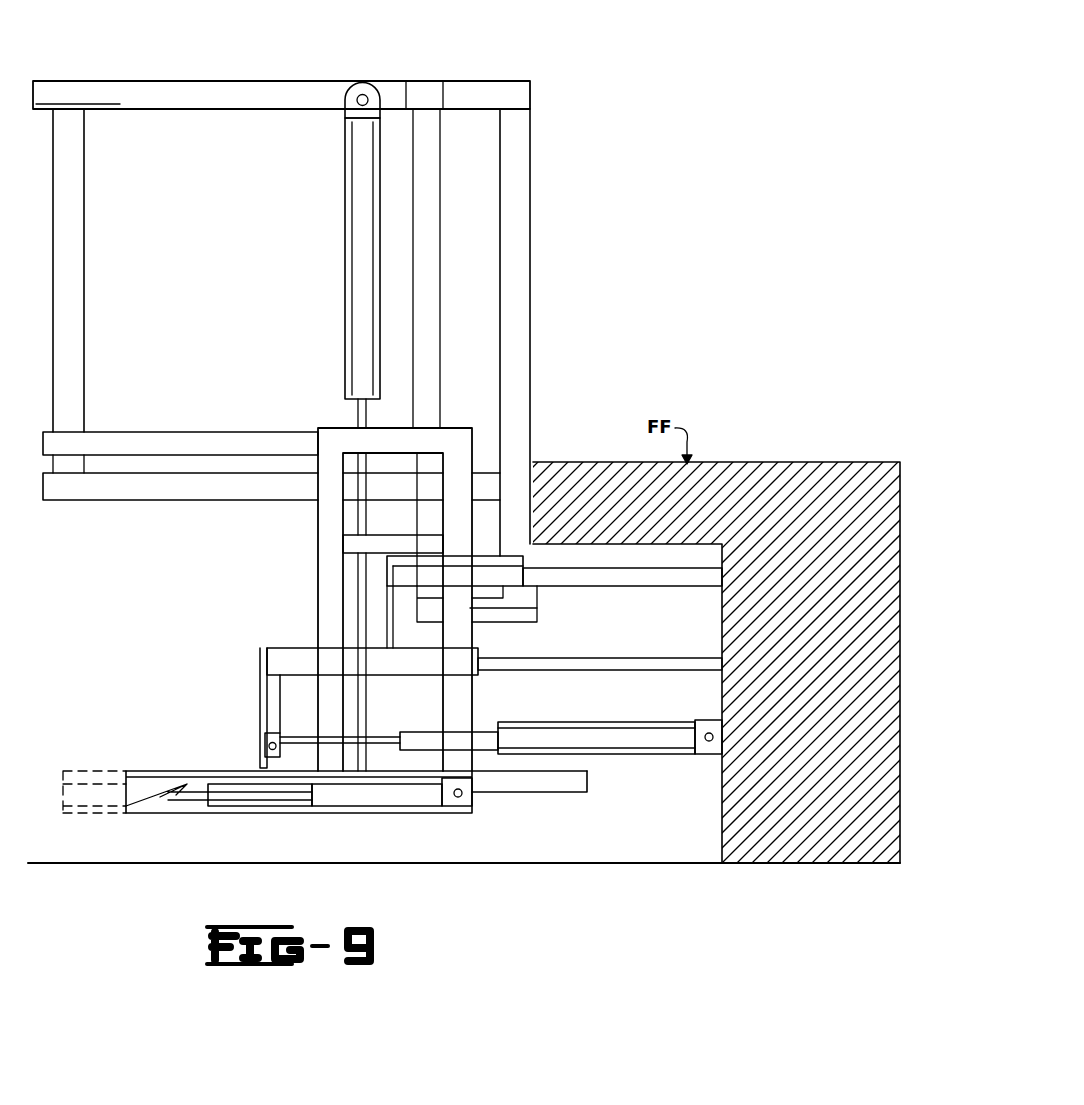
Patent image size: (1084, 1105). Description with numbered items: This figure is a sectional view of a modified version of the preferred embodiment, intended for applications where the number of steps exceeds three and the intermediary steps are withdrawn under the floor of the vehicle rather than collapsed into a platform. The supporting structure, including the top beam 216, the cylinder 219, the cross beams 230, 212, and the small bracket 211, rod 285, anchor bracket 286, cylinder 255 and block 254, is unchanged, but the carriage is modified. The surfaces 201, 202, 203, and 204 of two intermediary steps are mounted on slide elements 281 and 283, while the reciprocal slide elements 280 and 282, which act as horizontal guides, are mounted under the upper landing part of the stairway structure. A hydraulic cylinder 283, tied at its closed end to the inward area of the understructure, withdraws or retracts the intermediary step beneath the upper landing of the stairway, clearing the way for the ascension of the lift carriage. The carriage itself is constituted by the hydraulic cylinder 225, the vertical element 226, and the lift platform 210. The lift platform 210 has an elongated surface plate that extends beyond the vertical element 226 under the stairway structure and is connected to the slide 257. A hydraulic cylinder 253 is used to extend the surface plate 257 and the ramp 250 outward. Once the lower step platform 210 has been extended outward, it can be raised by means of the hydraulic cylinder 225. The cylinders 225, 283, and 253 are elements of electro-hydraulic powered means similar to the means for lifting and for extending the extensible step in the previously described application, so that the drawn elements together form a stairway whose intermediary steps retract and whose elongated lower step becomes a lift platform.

The top frame beam 216 is at (247, 86).
The hydraulic cylinder 219 is at (346, 290).
The upper cross beam 230 is at (239, 441).
The lower cross beam 212 is at (238, 500).
The hydraulic cylinder 225 is at (321, 557).
The step surface 202 is at (356, 624).
The step surface 201 is at (507, 560).
The reciprocal slide element 280 is at (694, 585).
The slide element 281 is at (541, 586).
The bracket 211 is at (537, 624).
The hydraulic cylinder 283 is at (428, 676).
The reciprocal slide element 282 is at (634, 662).
The step surface 203 is at (262, 656).
The step surface 204 is at (264, 733).
The piston rod 285 is at (283, 752).
The vertical element 226 is at (480, 721).
The anchor bracket 286 is at (706, 720).
The lift platform 210 is at (192, 772).
The slide 257 is at (586, 792).
The ramp 250 is at (175, 806).
The cylinder 255 is at (300, 806).
The hydraulic cylinder 253 is at (420, 806).
The pivot block 254 is at (458, 806).